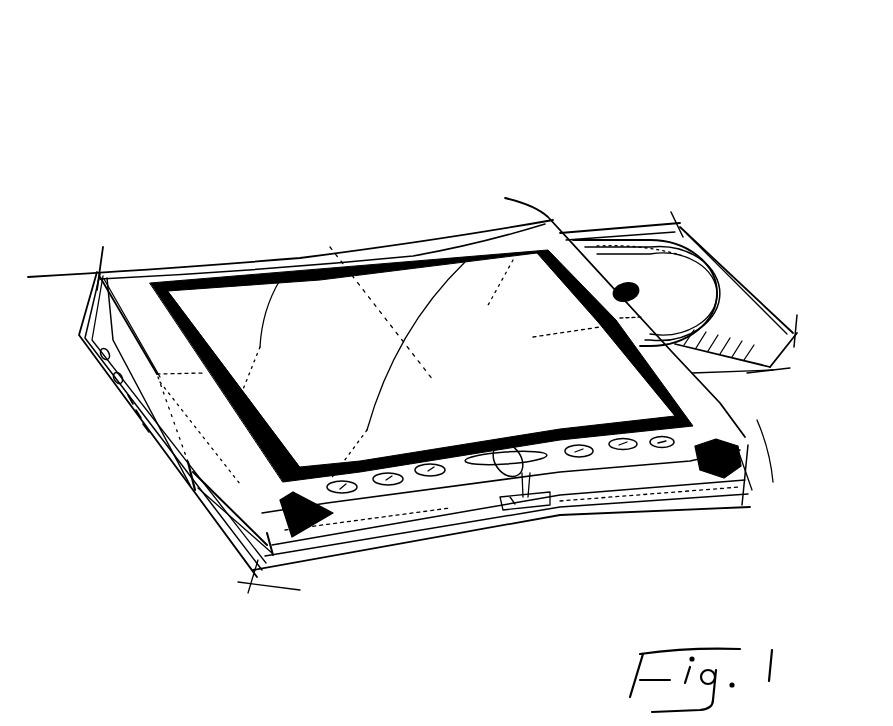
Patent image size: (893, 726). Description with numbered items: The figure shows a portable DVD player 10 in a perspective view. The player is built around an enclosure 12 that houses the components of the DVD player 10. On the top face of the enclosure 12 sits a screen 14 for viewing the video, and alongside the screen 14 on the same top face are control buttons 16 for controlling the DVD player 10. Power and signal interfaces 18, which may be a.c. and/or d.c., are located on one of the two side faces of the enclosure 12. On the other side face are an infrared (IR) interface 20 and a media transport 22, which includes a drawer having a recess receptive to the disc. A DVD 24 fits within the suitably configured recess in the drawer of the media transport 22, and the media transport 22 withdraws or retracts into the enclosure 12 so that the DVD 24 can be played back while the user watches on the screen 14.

The portable DVD player 10 is at (567, 142).
The enclosure 12 is at (387, 256).
The screen 14 is at (557, 393).
The control buttons 16 is at (577, 462).
The power and signal interfaces 18 is at (93, 386).
The infrared (IR) interface 20 is at (730, 505).
The media transport 22 is at (757, 327).
The DVD 24 is at (684, 290).